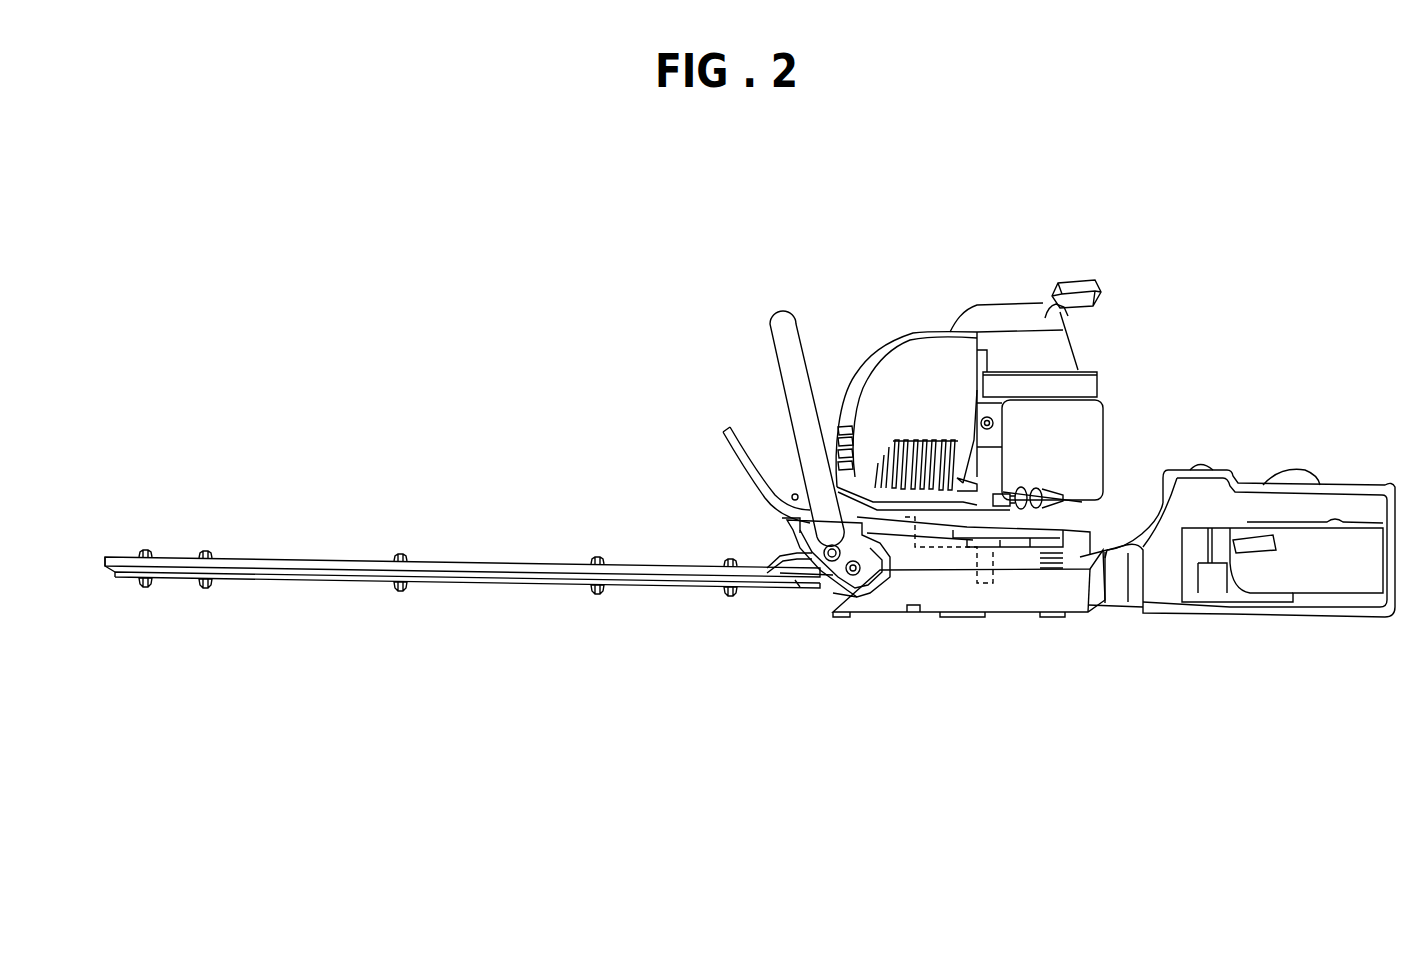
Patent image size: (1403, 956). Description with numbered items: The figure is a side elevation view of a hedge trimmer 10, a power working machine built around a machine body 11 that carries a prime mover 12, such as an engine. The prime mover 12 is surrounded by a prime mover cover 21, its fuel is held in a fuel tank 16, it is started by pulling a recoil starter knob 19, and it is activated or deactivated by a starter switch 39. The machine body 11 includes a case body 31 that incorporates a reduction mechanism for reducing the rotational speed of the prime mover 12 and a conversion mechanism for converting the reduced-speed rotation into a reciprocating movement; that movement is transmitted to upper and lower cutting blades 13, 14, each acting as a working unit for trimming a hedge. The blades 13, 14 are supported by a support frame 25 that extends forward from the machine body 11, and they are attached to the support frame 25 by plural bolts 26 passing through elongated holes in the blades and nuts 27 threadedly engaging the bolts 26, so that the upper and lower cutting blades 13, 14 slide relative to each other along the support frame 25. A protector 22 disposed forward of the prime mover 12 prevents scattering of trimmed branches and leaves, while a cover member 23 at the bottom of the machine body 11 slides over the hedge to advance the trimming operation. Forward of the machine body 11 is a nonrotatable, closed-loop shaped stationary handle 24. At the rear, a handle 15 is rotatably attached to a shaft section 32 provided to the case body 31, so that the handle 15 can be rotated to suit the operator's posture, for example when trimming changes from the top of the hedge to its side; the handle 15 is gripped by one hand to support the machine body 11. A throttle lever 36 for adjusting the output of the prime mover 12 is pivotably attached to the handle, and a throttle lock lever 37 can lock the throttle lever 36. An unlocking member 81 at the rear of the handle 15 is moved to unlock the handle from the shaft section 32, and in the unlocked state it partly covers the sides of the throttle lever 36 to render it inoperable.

The hedge trimmer 10 is at (298, 148).
The machine body 11 is at (912, 632).
The prime mover 12 is at (913, 547).
The upper cutting blade 13 is at (553, 592).
The lower cutting blade 14 is at (553, 592).
The handle 15 is at (1270, 452).
The fuel tank 16 is at (1107, 412).
The recoil starter knob 19 is at (1085, 290).
The prime mover cover 21 is at (1092, 375).
The protector 22 is at (727, 430).
The cover member 23 is at (998, 616).
The stationary handle 24 is at (778, 316).
The support frame 25 is at (497, 562).
The bolts 26 is at (145, 589).
The nuts 27 is at (145, 550).
The case body 31 is at (958, 592).
The shaft section 32 is at (1114, 518).
The throttle lever 36 is at (1278, 543).
The throttle lock lever 37 is at (1305, 476).
The starter switch 39 is at (1200, 466).
The unlocking member 81 is at (1212, 572).